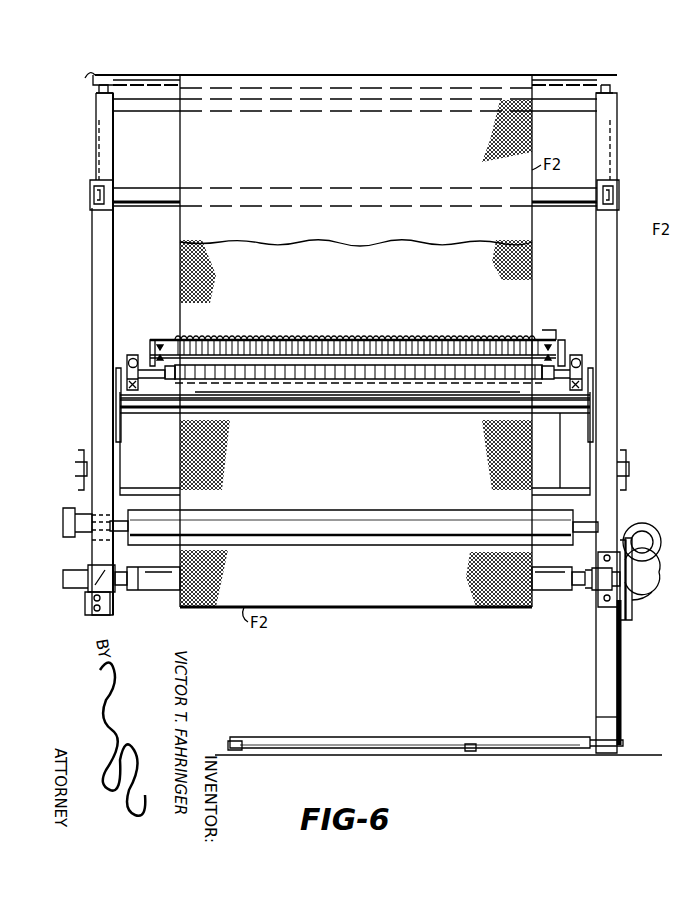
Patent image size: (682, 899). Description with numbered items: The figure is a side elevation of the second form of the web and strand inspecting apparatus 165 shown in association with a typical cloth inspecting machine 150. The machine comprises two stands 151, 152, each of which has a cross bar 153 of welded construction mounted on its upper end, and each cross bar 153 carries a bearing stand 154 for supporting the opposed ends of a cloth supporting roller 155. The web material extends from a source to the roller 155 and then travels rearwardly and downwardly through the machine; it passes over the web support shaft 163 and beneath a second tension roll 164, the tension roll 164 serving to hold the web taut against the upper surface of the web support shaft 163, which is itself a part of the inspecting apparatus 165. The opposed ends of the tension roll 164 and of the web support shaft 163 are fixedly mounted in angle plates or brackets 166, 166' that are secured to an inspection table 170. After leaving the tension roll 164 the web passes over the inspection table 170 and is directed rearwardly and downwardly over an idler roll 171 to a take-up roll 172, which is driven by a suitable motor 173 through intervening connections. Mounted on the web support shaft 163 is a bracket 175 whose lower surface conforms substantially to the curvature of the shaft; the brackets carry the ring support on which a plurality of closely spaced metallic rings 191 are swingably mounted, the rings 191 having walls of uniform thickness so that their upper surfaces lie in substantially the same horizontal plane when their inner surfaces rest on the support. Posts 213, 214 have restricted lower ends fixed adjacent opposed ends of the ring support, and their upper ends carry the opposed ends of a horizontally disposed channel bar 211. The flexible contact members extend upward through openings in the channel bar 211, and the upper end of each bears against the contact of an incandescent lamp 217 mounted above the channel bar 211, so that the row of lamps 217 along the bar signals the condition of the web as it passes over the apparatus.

The cloth inspecting machine 150 is at (617, 425).
The stand 151 is at (617, 352).
The stand 152 is at (92, 334).
The cross bar 153 is at (92, 234).
The bearing stand 154 is at (110, 155).
The cloth supporting roller 155 is at (100, 78).
The web support shaft 163 is at (181, 410).
The second tension roll 164 is at (347, 412).
The web and strand inspecting apparatus 165 is at (353, 342).
The angle plate 166 is at (85, 405).
The angle plate 166' is at (621, 405).
The inspection table 170 is at (556, 440).
The idler roll 171 is at (438, 509).
The take-up roll 172 is at (550, 592).
The motor 173 is at (656, 547).
The bracket 175 is at (137, 380).
The metallic ring 191 is at (305, 376).
The channel bar 211 is at (548, 330).
The post 213 is at (150, 350).
The post 214 is at (564, 340).
The incandescent lamp 217 is at (214, 331).